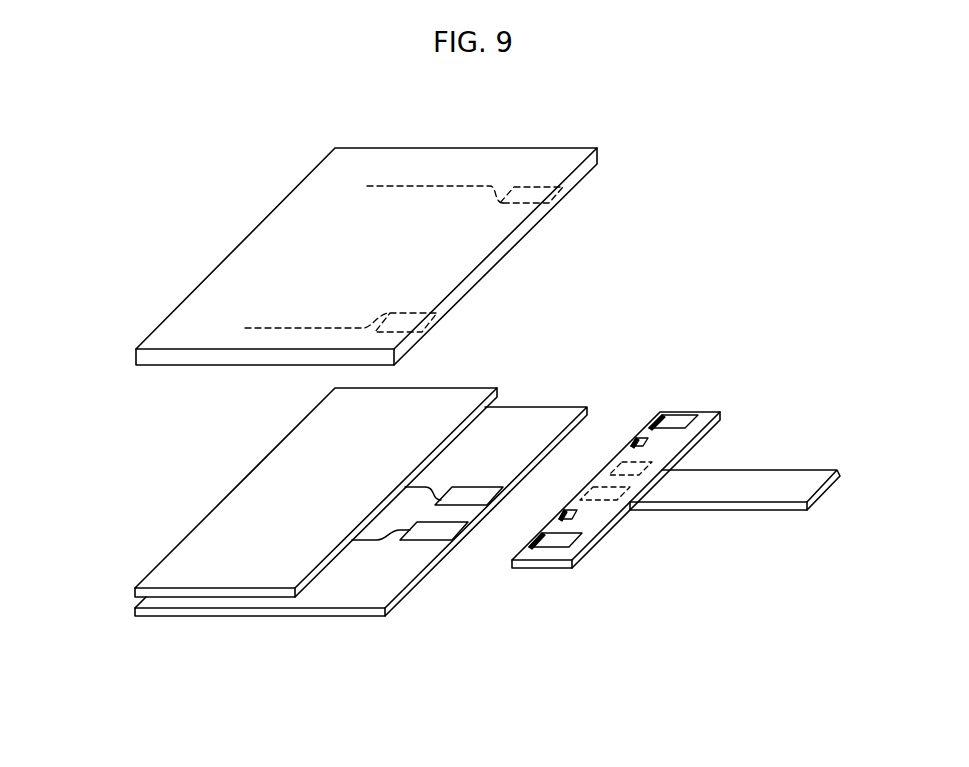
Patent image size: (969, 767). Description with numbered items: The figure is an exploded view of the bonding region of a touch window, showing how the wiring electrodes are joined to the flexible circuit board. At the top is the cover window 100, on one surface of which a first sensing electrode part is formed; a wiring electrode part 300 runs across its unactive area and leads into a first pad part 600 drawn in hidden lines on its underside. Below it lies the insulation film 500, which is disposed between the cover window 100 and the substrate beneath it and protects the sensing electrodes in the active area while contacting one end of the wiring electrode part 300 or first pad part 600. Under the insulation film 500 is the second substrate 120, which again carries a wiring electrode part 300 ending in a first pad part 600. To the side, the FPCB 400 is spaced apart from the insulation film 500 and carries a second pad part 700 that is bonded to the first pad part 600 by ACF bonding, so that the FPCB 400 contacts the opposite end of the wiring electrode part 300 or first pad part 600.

The cover window 100 is at (552, 158).
The second substrate 120 is at (177, 617).
The wiring electrode part 300 is at (419, 186).
The FPCB 400 is at (800, 483).
The insulation film 500 is at (163, 577).
The first pad part 600 is at (565, 195).
The second pad part 700 is at (679, 417).